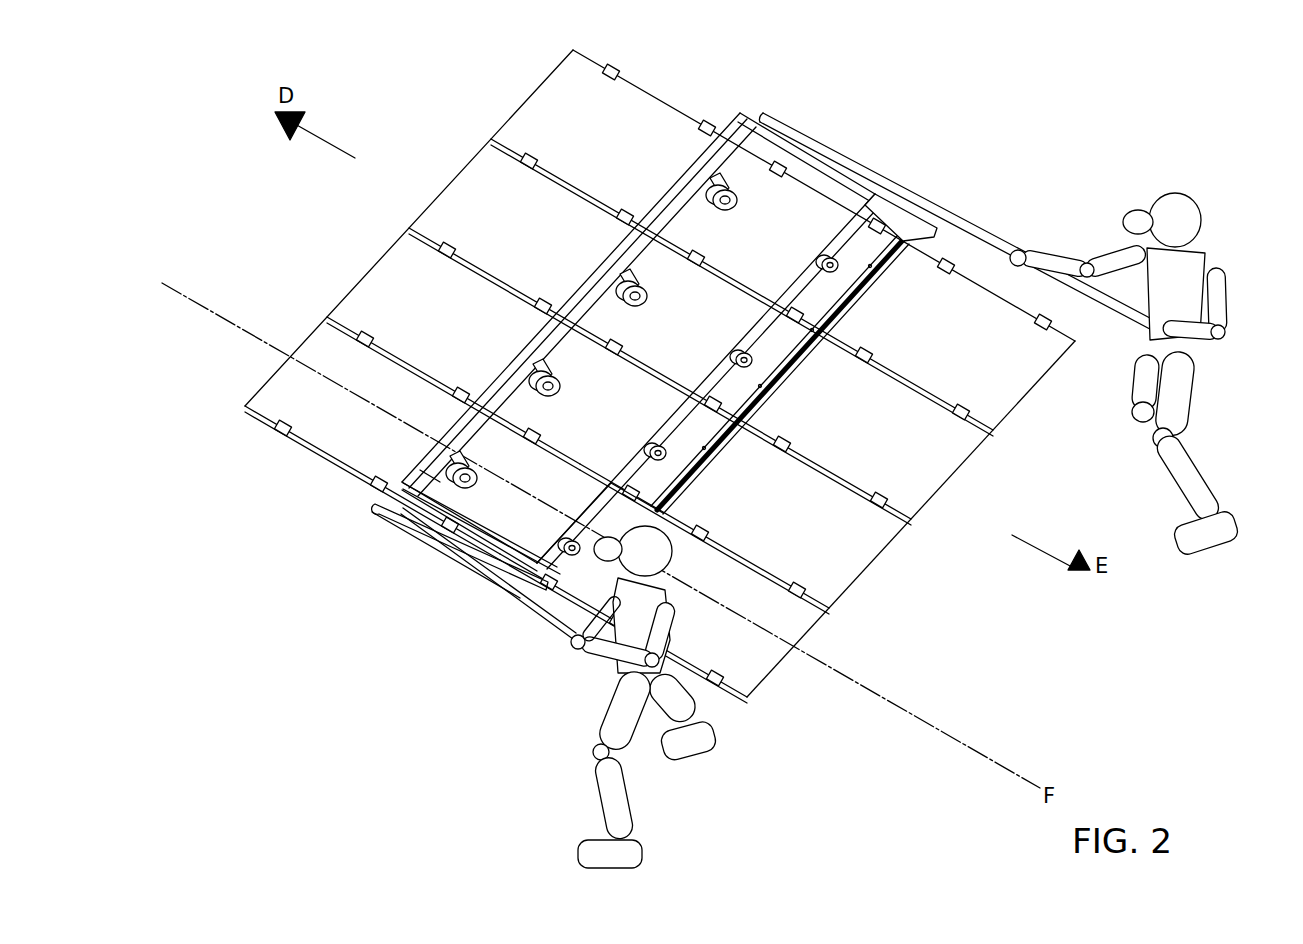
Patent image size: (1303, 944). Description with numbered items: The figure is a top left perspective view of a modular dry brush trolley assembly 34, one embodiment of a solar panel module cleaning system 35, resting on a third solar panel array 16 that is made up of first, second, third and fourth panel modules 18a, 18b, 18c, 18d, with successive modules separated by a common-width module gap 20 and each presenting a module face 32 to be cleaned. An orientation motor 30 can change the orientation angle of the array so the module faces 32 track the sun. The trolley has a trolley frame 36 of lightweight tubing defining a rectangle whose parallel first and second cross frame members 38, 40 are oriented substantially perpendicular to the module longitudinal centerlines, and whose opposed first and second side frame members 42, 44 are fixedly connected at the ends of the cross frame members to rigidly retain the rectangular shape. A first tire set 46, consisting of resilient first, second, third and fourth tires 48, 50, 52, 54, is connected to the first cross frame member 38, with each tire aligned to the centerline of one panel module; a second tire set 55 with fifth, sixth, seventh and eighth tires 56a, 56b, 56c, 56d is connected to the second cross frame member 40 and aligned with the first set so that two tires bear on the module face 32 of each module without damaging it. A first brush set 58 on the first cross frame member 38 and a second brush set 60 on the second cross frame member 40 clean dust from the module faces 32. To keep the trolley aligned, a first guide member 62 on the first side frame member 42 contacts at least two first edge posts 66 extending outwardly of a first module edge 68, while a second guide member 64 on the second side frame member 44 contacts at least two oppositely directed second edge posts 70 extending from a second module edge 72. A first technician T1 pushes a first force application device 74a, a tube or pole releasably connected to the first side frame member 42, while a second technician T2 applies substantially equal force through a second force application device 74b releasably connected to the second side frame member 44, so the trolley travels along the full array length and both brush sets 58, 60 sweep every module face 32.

The third solar panel array 16 is at (663, 94).
The first panel module 18a is at (528, 90).
The second panel module 18b is at (448, 180).
The third panel module 18c is at (365, 270).
The fourth panel module 18d is at (257, 362).
The module gap 20 is at (822, 603).
The orientation motor 30 is at (1066, 460).
The module face 32 is at (246, 396).
The modular dry brush trolley assembly 34 is at (804, 108).
The solar panel module cleaning system 35 is at (782, 50).
The trolley frame 36 is at (736, 108).
The first cross frame member 38 is at (436, 467).
The second cross frame member 40 is at (660, 514).
The first side frame member 42 is at (472, 515).
The second side frame member 44 is at (848, 186).
The first tire set 46 is at (400, 484).
The first tire 48 is at (405, 505).
The second tire 50 is at (563, 386).
The third tire 52 is at (648, 296).
The fourth tire 54 is at (735, 204).
The second tire set 55 is at (760, 392).
The fifth tire 56a is at (492, 590).
The sixth tire 56b is at (680, 460).
The seventh tire 56c is at (740, 380).
The eighth tire 56d is at (838, 318).
The first brush set 58 is at (482, 474).
The second brush set 60 is at (846, 340).
The first guide member 62 is at (420, 524).
The second guide member 64 is at (900, 216).
The first edge post 66 is at (718, 688).
The first module edge 68 is at (754, 700).
The second edge post 70 is at (620, 68).
The second module edge 72 is at (582, 48).
The first force application device 74a is at (556, 622).
The second force application device 74b is at (948, 216).
The first technician T1 is at (610, 715).
The second technician T2 is at (1196, 212).